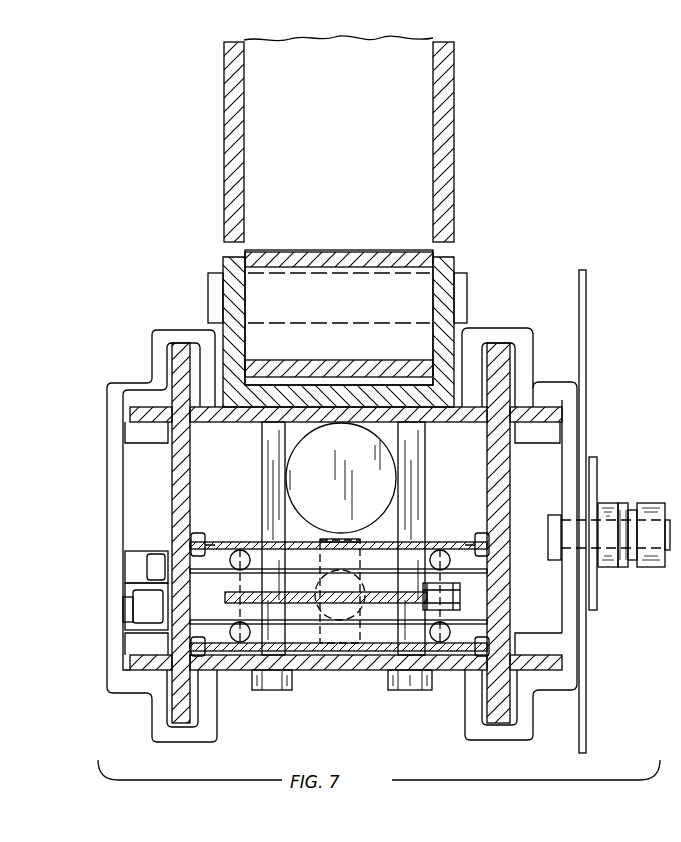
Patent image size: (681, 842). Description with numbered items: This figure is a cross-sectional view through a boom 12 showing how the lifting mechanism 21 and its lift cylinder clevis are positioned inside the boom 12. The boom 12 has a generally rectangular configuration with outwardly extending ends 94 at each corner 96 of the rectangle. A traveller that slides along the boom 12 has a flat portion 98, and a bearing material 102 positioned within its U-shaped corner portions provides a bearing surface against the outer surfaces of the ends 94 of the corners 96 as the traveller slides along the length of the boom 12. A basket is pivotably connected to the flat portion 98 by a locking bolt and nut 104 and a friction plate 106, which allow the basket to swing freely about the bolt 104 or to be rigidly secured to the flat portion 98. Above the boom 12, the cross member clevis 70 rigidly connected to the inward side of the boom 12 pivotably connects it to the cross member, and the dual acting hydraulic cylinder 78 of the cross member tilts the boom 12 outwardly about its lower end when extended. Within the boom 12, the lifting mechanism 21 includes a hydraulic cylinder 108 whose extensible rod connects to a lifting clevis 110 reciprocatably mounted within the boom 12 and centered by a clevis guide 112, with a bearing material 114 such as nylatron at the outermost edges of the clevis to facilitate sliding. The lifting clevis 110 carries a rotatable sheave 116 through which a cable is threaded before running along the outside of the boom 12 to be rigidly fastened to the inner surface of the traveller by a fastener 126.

The boom 12 is at (487, 322).
The lifting mechanism 21 is at (472, 457).
The cross member clevis 70 is at (457, 265).
The dual acting hydraulic cylinder 78 is at (455, 185).
The outwardly extending ends 94 is at (175, 370).
The corners 96 is at (185, 412).
The flat portion 98 is at (583, 642).
The bearing material 102 is at (565, 650).
The locking bolt and nut 104 is at (410, 692).
The friction plate 106 is at (597, 482).
The hydraulic cylinder 108 is at (330, 493).
The lifting clevis 110 is at (235, 541).
The clevis guide 112 is at (200, 540).
The bearing material 114 is at (190, 546).
The sheave 116 is at (318, 580).
The fastener 126 is at (125, 606).